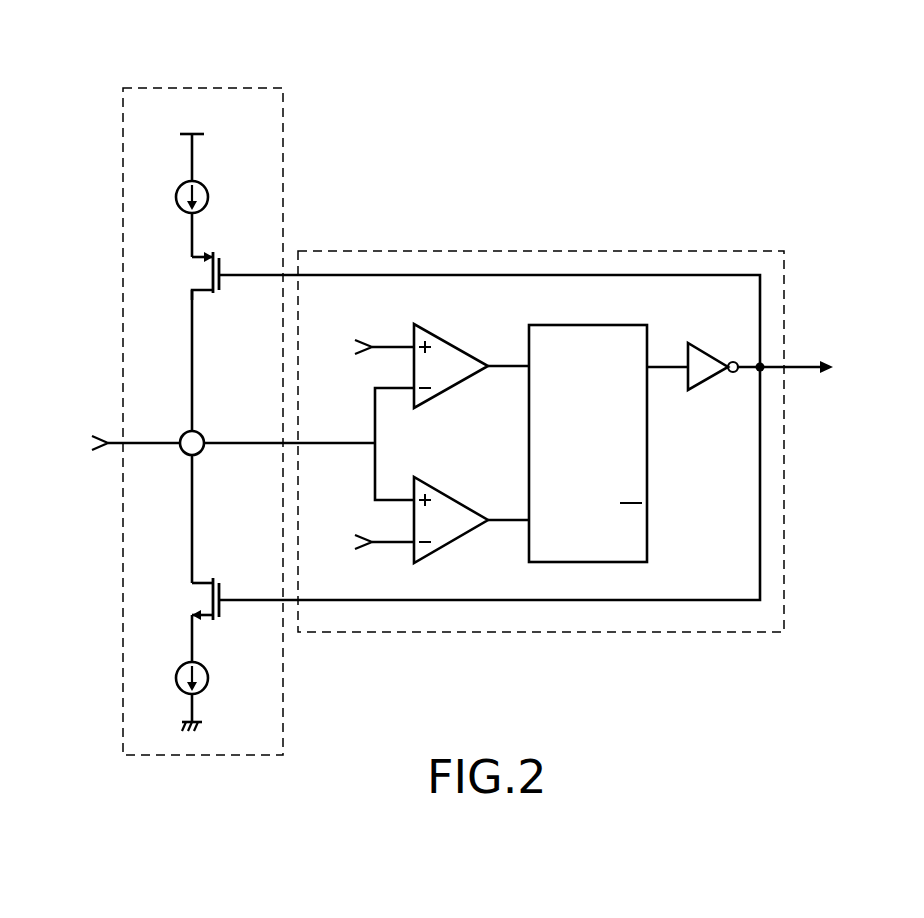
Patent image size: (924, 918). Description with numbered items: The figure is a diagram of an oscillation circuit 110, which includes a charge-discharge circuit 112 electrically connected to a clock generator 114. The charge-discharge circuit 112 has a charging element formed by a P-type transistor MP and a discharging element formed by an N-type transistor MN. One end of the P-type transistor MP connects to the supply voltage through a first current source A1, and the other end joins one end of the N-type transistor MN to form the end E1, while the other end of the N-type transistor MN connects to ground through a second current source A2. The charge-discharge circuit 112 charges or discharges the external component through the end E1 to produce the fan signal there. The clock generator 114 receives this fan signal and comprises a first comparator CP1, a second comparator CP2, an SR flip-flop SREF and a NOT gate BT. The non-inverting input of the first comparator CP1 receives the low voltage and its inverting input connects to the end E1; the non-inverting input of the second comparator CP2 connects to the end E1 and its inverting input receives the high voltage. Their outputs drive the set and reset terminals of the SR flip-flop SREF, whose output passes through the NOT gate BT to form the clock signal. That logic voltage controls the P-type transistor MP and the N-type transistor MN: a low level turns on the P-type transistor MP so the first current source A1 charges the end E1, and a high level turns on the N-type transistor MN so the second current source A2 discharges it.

The oscillation circuit 110 is at (676, 73).
The charge-discharge circuit 112 is at (193, 88).
The clock generator 114 is at (542, 251).
The first current source A1 is at (213, 196).
The second current source A2 is at (213, 679).
The P-type transistor MP is at (180, 276).
The N-type transistor MN is at (179, 599).
The end E1 is at (181, 434).
The first comparator CP1 is at (462, 360).
The second comparator CP2 is at (462, 517).
The SR flip-flop SREF is at (529, 437).
The NOT gate BT is at (715, 350).